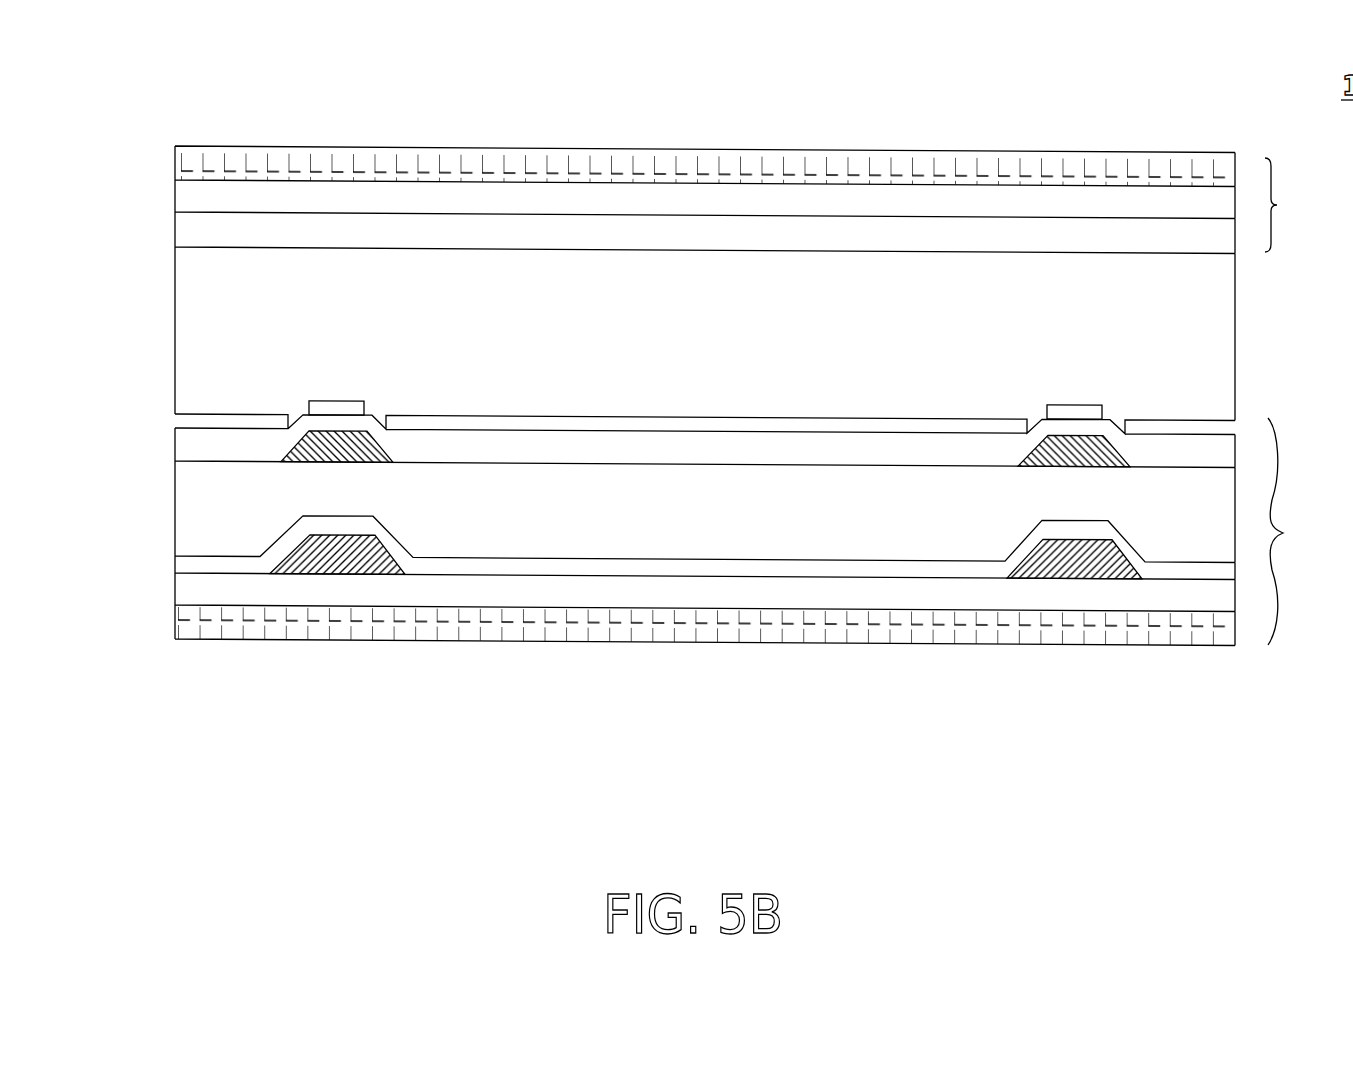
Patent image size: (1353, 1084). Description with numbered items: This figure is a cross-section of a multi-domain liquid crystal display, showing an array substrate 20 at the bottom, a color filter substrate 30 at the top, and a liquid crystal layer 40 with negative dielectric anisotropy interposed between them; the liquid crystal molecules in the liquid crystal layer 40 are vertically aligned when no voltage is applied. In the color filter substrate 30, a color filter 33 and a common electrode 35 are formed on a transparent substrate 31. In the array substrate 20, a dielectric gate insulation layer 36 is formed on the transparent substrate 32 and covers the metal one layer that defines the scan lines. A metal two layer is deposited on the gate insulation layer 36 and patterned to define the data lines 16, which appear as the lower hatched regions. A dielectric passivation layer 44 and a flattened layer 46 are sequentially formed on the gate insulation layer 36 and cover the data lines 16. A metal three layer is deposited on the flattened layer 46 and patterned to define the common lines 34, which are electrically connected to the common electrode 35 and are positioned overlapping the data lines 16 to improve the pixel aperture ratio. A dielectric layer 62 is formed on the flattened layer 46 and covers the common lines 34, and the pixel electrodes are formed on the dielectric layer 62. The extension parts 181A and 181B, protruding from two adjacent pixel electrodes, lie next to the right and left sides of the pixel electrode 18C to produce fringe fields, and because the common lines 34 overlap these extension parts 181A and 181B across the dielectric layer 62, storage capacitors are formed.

The color filter substrate 30 is at (1296, 205).
The transparent substrate 31 is at (402, 158).
The color filter 33 is at (618, 198).
The common electrode 35 is at (867, 235).
The liquid crystal layer 40 is at (207, 308).
The array substrate 20 is at (1298, 531).
The transparent substrate 32 is at (578, 633).
The gate insulation layer 36 is at (835, 598).
The passivation layer 44 is at (772, 570).
The flattened layer 46 is at (708, 523).
The data lines 16 is at (323, 567).
The common lines 34 is at (327, 458).
The dielectric layer 62 is at (618, 447).
The pixel electrode 18C is at (683, 423).
The extension part 181A is at (1075, 408).
The extension part 181B is at (340, 403).